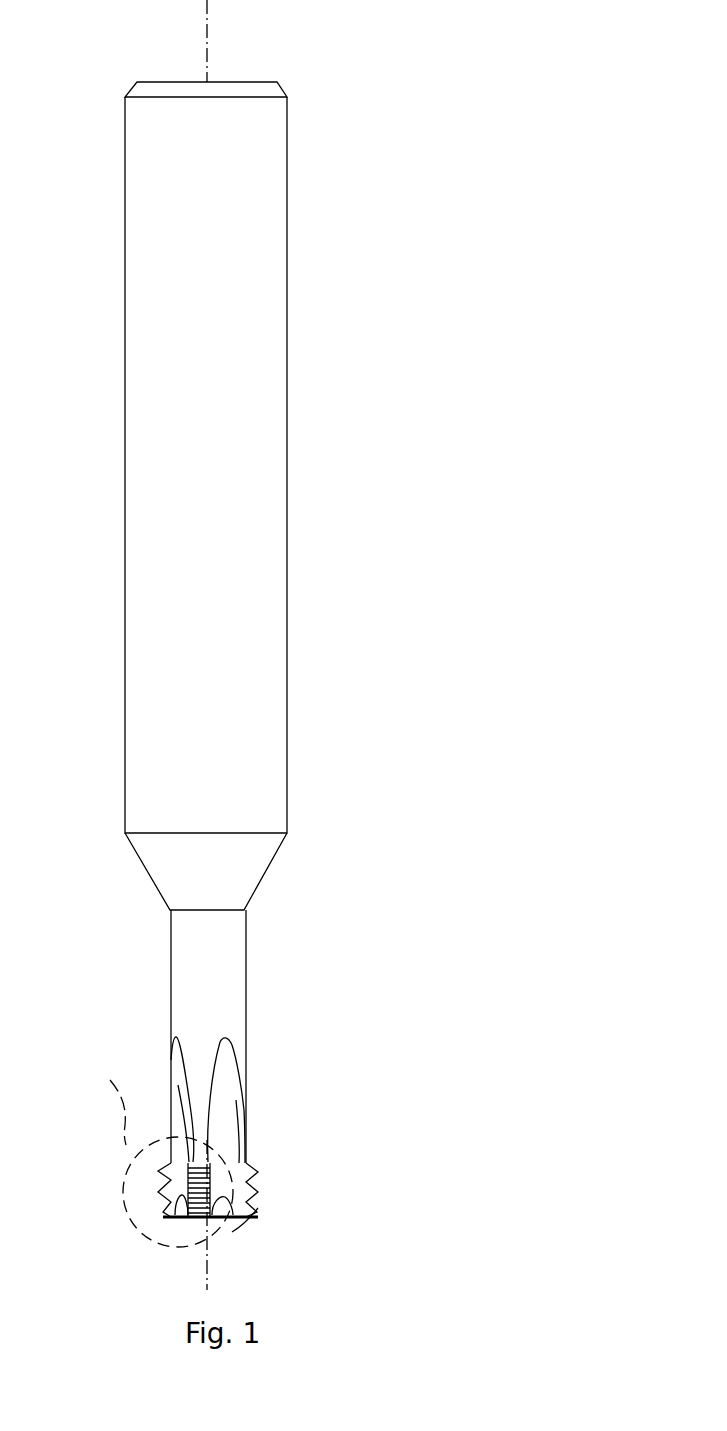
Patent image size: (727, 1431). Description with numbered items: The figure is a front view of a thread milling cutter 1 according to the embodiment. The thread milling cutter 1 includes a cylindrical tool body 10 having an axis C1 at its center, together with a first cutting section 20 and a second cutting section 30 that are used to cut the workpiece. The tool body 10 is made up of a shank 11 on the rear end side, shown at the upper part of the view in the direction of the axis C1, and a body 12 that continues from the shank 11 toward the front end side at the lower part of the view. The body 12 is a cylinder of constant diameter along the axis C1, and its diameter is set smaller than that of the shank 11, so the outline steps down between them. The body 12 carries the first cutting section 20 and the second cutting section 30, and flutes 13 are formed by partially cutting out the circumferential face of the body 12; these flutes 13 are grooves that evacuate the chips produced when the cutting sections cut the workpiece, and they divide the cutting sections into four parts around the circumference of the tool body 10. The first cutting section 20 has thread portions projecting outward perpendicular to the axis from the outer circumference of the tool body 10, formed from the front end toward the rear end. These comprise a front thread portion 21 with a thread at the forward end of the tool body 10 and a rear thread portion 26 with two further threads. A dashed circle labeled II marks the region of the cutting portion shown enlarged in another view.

The thread milling cutter 1 is at (462, 172).
The tool body 10 is at (368, 310).
The shank 11 is at (253, 443).
The body 12 is at (218, 963).
The flutes 13 is at (173, 1074).
The first cutting section 20 is at (228, 1167).
The front thread portion 21 is at (163, 1215).
The rear thread portion 26 is at (157, 1168).
The second cutting section 30 is at (232, 1235).
The axis C1 is at (209, 8).
The detail view region II is at (163, 1150).